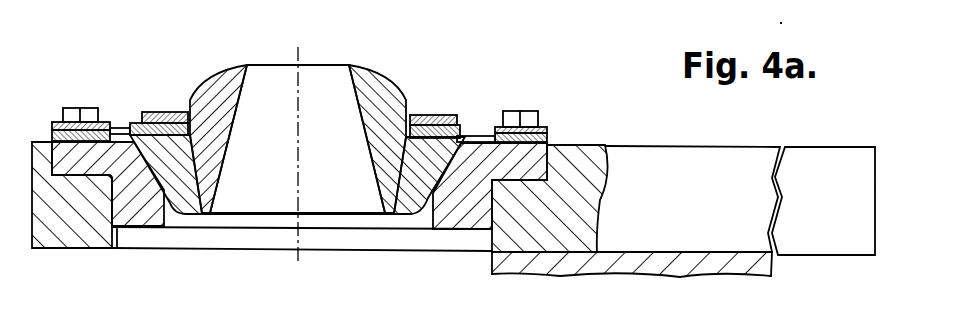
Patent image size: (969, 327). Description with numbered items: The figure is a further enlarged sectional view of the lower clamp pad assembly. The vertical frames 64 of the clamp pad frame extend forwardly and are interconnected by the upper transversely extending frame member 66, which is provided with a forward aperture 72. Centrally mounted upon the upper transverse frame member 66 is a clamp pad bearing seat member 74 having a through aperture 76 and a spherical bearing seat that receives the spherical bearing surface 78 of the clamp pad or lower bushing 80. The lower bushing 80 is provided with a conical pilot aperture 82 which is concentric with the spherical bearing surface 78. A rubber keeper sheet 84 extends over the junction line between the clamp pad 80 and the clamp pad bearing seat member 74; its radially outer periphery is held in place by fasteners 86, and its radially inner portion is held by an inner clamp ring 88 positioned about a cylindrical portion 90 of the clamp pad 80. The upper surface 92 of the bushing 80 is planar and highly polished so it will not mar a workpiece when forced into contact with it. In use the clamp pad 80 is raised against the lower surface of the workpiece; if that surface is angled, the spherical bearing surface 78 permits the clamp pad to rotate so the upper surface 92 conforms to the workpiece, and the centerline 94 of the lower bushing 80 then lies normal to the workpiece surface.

The vertical frames 64 is at (636, 266).
The upper transversely extending frame member 66 is at (681, 157).
The forward aperture 72 is at (117, 250).
The clamp pad bearing seat member 74 is at (100, 198).
The through aperture 76 is at (177, 252).
The spherical bearing surface 78 is at (411, 228).
The lower bushing 80 is at (377, 100).
The conical pilot aperture 82 is at (233, 252).
The rubber keeper sheet 84 is at (116, 126).
The fasteners 86 is at (531, 112).
The inner clamp ring 88 is at (130, 135).
The cylindrical portion 90 is at (187, 113).
The upper surface 92 is at (247, 64).
The centerline 94 is at (300, 171).